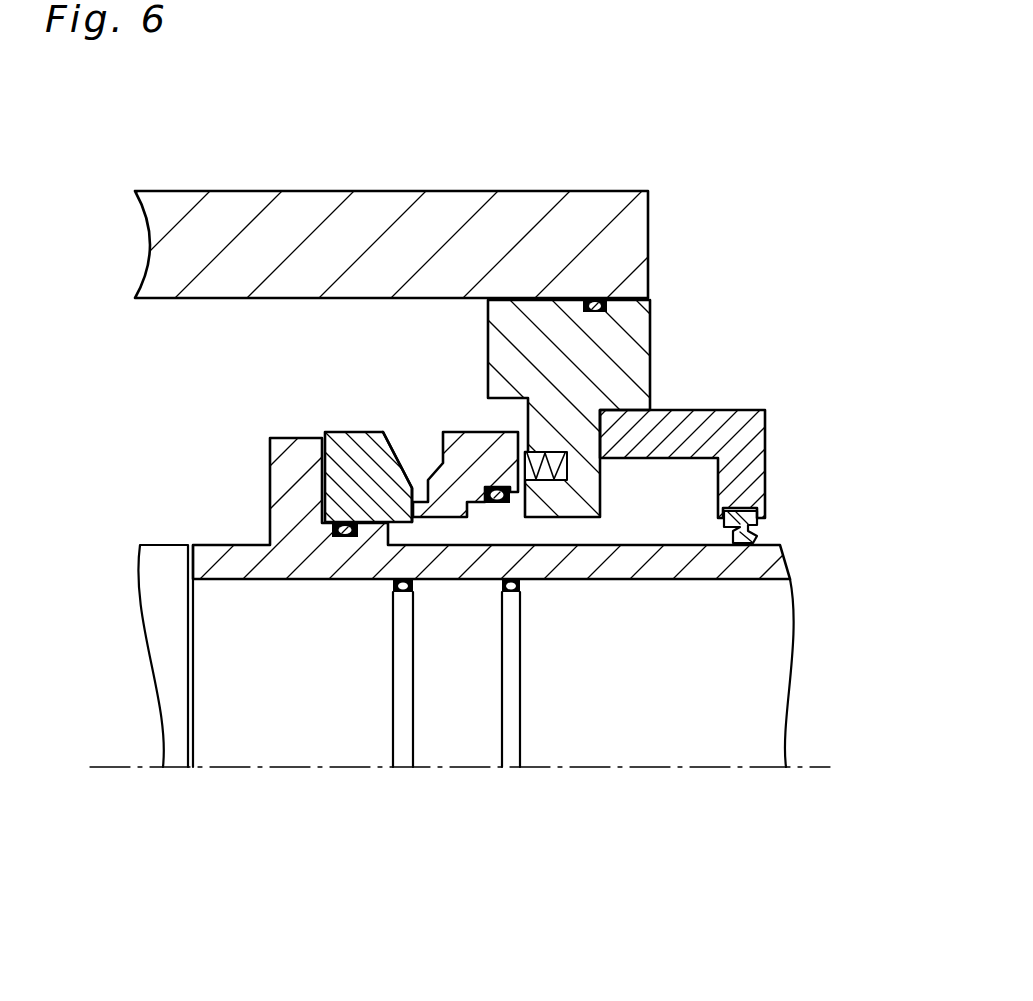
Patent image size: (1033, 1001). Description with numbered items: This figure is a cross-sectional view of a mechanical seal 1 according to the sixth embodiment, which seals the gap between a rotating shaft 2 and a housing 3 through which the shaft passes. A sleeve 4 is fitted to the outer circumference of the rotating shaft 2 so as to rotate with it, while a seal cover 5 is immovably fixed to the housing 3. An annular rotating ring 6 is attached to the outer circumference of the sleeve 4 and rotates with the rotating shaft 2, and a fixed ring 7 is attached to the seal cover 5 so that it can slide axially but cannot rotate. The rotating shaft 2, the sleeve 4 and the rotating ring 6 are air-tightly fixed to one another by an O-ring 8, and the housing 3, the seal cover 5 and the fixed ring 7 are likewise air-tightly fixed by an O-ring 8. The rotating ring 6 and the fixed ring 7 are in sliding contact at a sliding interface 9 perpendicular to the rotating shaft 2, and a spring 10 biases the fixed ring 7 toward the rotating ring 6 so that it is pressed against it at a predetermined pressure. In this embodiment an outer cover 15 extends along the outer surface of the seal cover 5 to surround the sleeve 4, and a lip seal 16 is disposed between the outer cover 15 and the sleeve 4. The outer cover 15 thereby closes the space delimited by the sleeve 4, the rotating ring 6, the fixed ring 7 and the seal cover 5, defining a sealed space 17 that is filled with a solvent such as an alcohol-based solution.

The mechanical seal 1 is at (802, 360).
The rotating shaft 2 is at (790, 682).
The housing 3 is at (297, 193).
The sleeve 4 is at (785, 560).
The seal cover 5 is at (651, 365).
The rotating ring 6 is at (332, 428).
The fixed ring 7 is at (458, 428).
The O-ring 8 is at (593, 298).
The sliding interface 9 is at (385, 430).
The spring 10 is at (548, 455).
The outer cover 15 is at (767, 450).
The lip seal 16 is at (763, 533).
The sealed space 17 is at (672, 521).